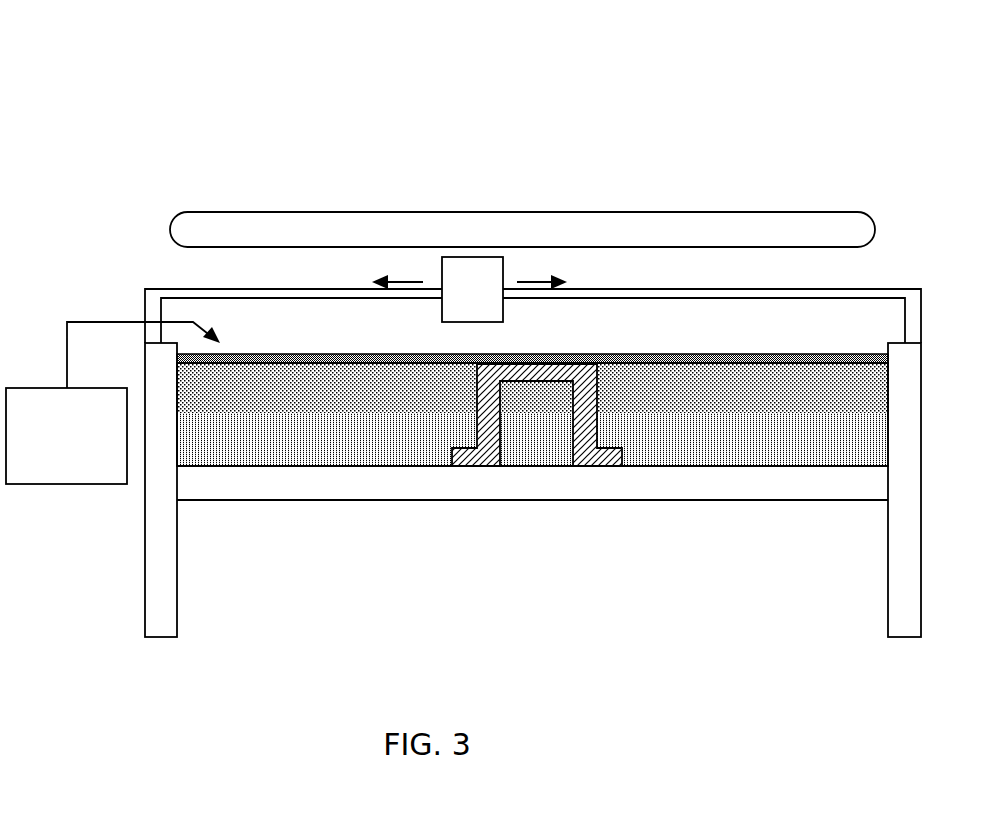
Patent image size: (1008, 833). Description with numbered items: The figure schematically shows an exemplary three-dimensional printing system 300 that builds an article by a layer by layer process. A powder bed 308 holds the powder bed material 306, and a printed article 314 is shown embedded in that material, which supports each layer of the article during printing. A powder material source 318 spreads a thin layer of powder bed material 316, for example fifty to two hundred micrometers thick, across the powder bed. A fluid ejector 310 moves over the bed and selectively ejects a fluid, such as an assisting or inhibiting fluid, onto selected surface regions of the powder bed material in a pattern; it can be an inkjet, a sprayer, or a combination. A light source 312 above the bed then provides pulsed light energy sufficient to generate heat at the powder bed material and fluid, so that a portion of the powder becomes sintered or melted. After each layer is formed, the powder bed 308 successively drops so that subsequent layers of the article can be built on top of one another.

The 3D printing system 300 is at (167, 90).
The powder bed material 306 is at (362, 450).
The powder bed 308 is at (660, 480).
The fluid ejector 310 is at (491, 305).
The light source 312 is at (540, 239).
The printed article 314 is at (582, 377).
The thin layer of powder bed material 316 is at (418, 357).
The powder material source 318 is at (47, 447).